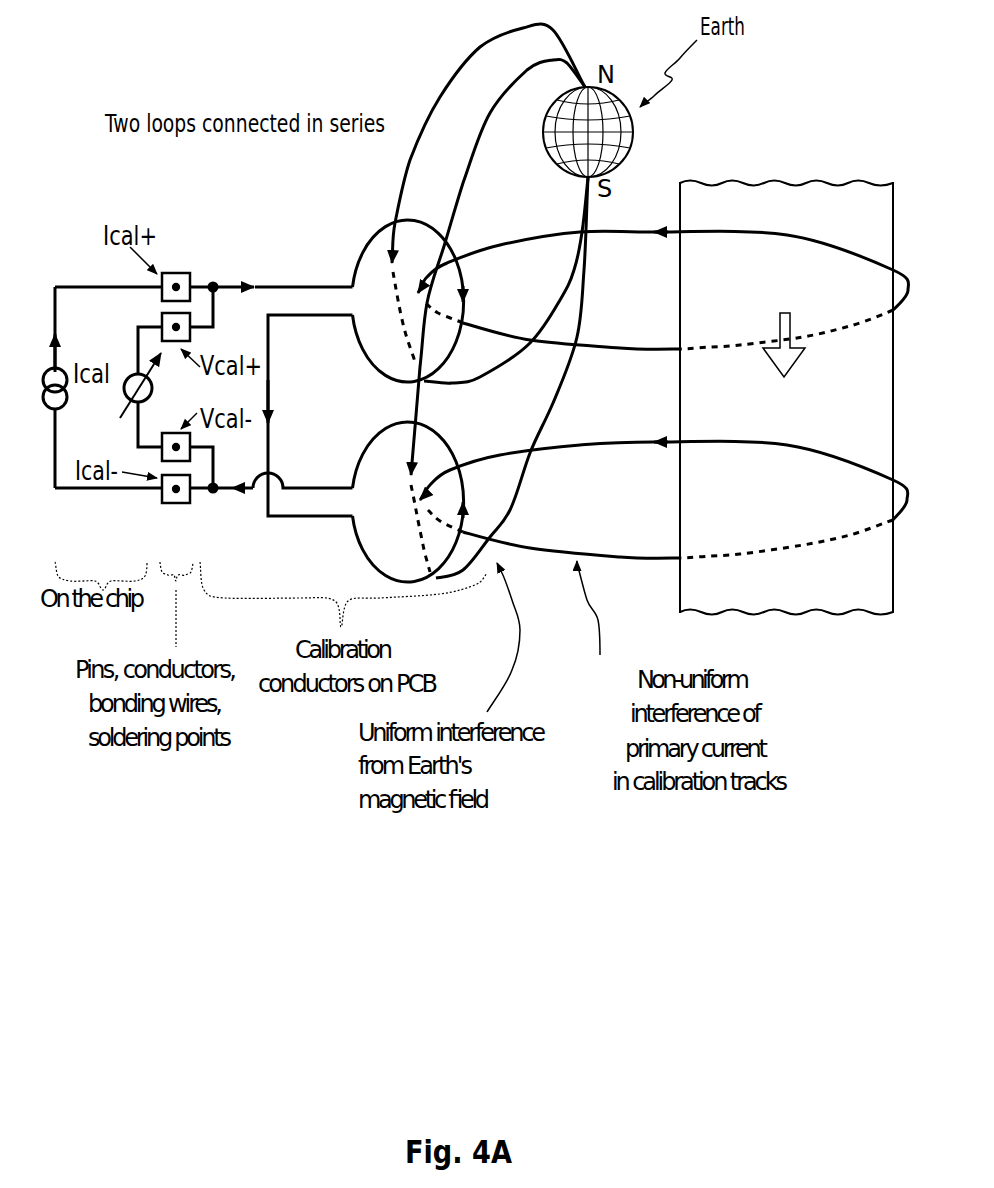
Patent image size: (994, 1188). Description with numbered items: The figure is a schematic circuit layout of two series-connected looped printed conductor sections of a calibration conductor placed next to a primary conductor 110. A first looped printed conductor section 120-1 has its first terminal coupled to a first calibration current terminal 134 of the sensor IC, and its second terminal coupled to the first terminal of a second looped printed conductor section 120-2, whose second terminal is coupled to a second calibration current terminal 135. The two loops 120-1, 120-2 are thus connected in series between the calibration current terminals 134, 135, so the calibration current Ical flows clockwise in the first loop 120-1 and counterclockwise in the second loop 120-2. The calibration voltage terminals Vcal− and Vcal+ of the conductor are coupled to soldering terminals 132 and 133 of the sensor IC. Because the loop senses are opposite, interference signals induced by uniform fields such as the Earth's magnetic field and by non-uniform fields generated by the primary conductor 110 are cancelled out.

The primary conductor 110 is at (808, 237).
The first looped printed conductor section 120-1 is at (457, 235).
The second looped printed conductor section 120-2 is at (440, 433).
The soldering terminal 132 is at (162, 459).
The soldering terminal 133 is at (162, 326).
The first calibration current terminal 134 is at (186, 273).
The second calibration current terminal 135 is at (187, 504).